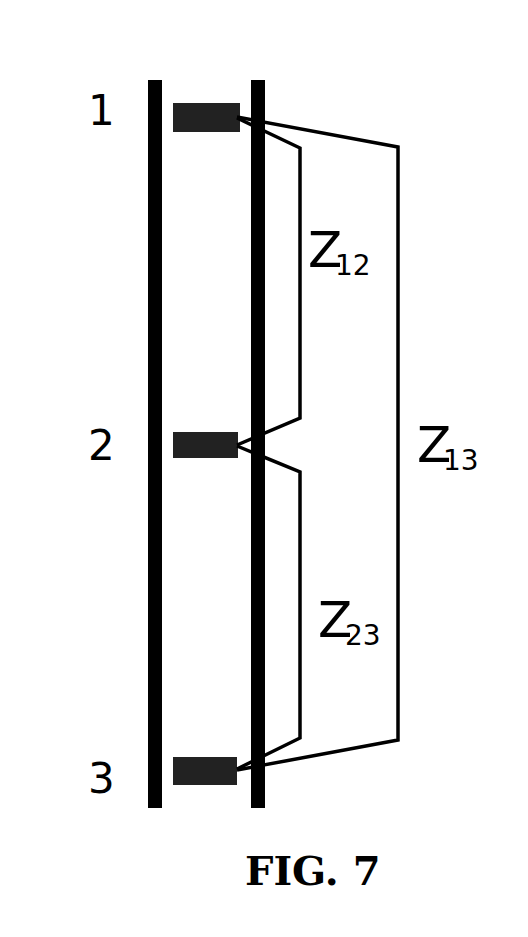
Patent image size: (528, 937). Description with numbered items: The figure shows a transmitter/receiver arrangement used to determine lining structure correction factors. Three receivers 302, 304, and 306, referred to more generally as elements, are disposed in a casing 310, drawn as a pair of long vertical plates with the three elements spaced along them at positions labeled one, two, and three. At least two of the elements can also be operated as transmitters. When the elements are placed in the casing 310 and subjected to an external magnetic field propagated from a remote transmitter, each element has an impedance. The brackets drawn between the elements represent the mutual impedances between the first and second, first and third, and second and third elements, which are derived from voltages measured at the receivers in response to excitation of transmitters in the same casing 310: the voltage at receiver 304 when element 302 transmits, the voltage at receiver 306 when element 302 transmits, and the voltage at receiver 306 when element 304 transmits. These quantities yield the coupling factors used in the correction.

The receiver 302 is at (208, 103).
The receiver 304 is at (192, 432).
The receiver 306 is at (185, 757).
The casing 310 is at (148, 570).